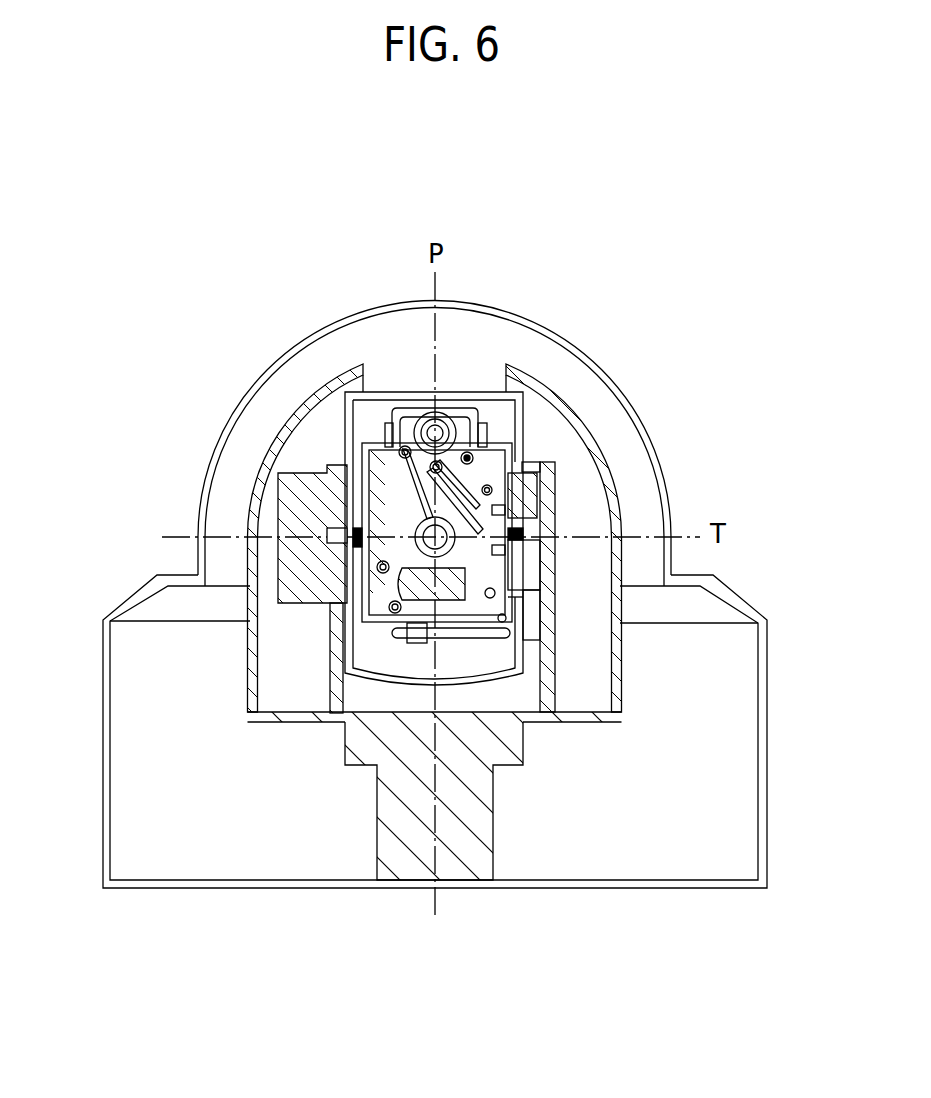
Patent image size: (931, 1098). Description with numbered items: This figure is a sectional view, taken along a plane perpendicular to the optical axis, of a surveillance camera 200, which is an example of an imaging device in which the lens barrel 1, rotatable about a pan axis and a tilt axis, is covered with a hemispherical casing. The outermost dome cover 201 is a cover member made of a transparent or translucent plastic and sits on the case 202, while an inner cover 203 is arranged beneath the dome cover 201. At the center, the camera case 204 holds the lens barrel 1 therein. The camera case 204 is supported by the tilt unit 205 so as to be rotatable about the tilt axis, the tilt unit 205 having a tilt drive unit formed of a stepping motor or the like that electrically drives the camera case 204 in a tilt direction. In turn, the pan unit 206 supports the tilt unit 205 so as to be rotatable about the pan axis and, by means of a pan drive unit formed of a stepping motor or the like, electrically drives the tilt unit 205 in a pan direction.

The surveillance camera 200 is at (252, 220).
The lens barrel 1 is at (385, 412).
The dome cover 201 is at (258, 377).
The case 202 is at (133, 592).
The inner cover 203 is at (562, 413).
The camera case 204 is at (523, 682).
The tilt unit 205 is at (330, 637).
The pan unit 206 is at (377, 803).